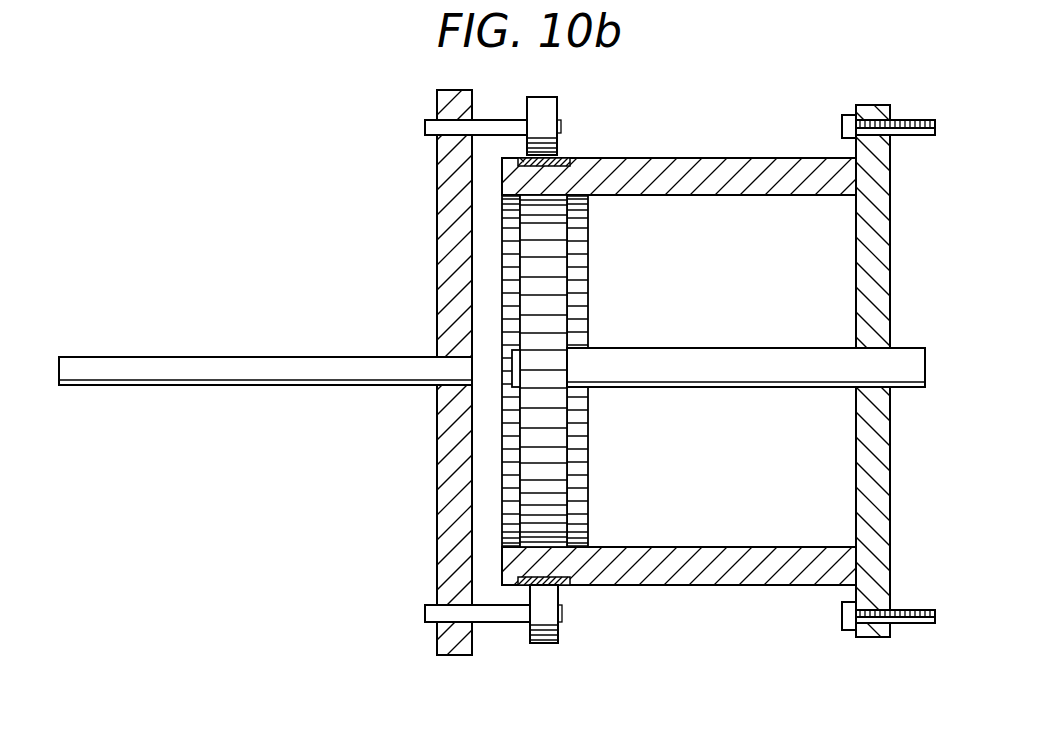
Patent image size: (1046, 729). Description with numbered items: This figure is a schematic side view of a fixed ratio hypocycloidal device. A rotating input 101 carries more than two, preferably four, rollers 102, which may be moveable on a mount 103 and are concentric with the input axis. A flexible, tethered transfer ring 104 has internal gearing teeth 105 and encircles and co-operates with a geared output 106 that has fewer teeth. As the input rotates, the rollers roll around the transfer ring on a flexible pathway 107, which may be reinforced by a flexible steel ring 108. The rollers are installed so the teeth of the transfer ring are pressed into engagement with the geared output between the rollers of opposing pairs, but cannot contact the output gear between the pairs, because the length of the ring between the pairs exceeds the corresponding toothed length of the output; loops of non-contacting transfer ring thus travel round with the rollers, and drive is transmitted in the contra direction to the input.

The rotating input 101 is at (210, 367).
The rollers 102 is at (545, 110).
The mount 103 is at (445, 502).
The transfer ring 104 is at (758, 573).
The internal gearing teeth 105 is at (503, 198).
The geared output 106 is at (523, 317).
The flexible pathway 107 is at (683, 148).
The flexible steel ring 108 is at (577, 158).